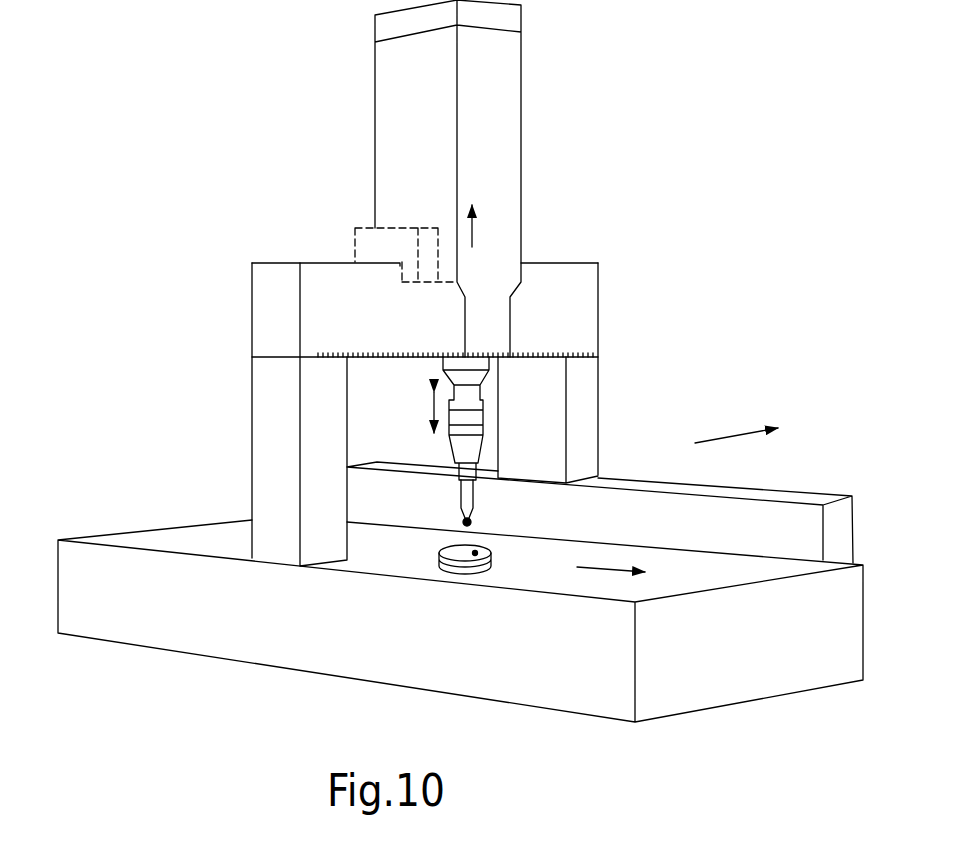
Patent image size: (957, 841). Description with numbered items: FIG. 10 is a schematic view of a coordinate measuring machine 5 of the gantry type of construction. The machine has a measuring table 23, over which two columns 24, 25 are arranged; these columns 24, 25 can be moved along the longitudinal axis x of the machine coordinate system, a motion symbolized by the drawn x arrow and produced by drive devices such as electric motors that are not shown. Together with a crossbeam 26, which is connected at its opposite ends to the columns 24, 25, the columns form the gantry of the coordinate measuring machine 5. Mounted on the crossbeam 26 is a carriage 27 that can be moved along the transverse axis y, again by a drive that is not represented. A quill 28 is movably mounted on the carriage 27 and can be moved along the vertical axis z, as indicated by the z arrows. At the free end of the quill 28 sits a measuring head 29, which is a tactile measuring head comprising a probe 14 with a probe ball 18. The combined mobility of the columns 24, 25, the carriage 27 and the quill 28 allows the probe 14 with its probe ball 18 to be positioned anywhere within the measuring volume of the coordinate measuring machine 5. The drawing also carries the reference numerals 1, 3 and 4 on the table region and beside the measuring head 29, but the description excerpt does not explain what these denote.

The workpiece 1 is at (458, 545).
The measurement point 3 is at (478, 553).
The measuring table 4 is at (478, 467).
The coordinate measuring machine 5 is at (262, 719).
The probe 14 is at (457, 517).
The probe ball 18 is at (472, 521).
The measuring table 23 is at (195, 525).
The column 24 is at (250, 428).
The column 25 is at (583, 385).
The crossbeam 26 is at (558, 277).
The carriage 27 is at (500, 77).
The quill 28 is at (478, 362).
The measuring head 29 is at (600, 475).